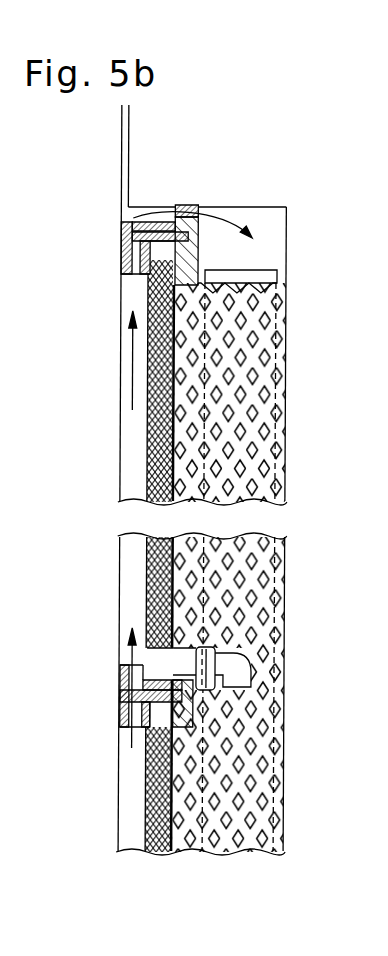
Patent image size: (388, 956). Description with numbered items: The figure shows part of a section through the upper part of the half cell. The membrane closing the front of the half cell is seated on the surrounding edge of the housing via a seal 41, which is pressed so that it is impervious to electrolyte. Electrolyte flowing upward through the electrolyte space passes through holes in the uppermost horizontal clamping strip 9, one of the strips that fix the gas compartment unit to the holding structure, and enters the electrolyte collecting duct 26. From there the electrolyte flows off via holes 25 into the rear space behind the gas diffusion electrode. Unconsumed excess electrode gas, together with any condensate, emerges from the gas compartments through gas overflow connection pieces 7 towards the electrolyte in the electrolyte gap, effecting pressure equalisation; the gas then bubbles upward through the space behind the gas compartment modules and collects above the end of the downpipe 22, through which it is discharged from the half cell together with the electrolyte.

The seal 41 is at (126, 113).
The electrolyte collecting duct 26 is at (153, 207).
The holes 25 is at (190, 218).
The horizontal clamping strip 9 is at (122, 265).
The downpipe 22 is at (260, 268).
The gas overflow connection piece 7 is at (248, 672).